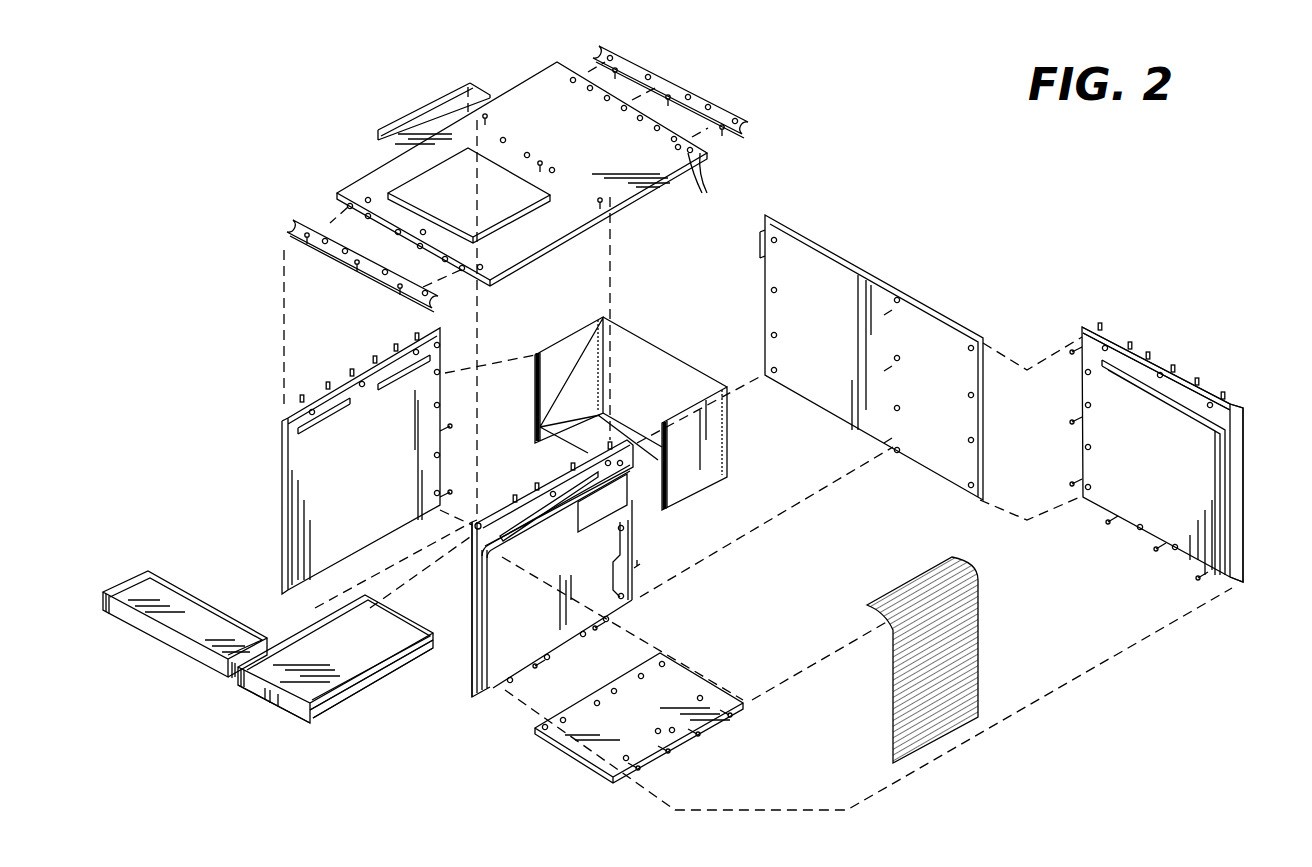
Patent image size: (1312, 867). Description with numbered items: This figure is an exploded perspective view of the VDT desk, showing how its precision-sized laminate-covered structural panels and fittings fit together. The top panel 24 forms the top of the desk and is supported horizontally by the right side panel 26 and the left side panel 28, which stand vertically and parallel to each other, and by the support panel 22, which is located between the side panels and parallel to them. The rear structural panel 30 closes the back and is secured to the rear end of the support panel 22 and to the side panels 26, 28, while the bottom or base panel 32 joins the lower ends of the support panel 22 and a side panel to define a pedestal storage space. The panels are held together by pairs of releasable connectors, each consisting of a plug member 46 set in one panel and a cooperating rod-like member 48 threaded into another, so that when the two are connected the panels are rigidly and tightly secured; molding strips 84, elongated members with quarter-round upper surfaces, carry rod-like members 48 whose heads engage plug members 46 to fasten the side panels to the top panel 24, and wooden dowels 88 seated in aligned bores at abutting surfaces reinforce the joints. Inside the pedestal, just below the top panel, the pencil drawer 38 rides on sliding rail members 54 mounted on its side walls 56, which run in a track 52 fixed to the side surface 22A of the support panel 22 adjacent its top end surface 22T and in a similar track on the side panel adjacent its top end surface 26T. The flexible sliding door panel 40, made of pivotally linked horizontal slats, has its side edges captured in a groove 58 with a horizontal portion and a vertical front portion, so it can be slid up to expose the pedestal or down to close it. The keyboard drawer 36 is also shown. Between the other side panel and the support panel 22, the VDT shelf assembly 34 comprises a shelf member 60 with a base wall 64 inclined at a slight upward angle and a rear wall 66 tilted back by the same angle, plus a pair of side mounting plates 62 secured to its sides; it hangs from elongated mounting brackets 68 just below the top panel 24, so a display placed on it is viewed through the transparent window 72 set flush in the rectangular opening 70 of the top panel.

The support panel 22 is at (600, 612).
The side surface of the support panel 22A is at (474, 590).
The top end surface of the support panel 22T is at (562, 479).
The top panel 24 is at (570, 141).
The right side panel 26 is at (1166, 460).
The top end surface of the right side panel 26T is at (1187, 373).
The left side panel 28 is at (350, 515).
The rear structural panel 30 is at (948, 367).
The bottom or base panel 32 is at (675, 710).
The VDT shelf assembly 34 is at (655, 410).
The keyboard drawer 36 is at (197, 622).
The pencil drawer 38 is at (376, 655).
The sliding door panel 40 is at (968, 632).
The plug member 46 is at (368, 198).
The rod-like member 48 is at (665, 95).
The track 52 is at (298, 430).
The sliding rail members 54 is at (387, 675).
The side walls of the pencil drawer 56 is at (330, 692).
The groove 58 is at (486, 637).
The shelf member 60 is at (633, 347).
The side mounting plates 62 is at (573, 342).
The base wall 64 is at (570, 423).
The rear wall 66 is at (678, 383).
The elongated mounting brackets 68 is at (390, 353).
The rectangular opening 70 is at (408, 202).
The transparent window 72 is at (447, 103).
The molding strips 84 is at (707, 102).
The dowels 88 is at (300, 406).